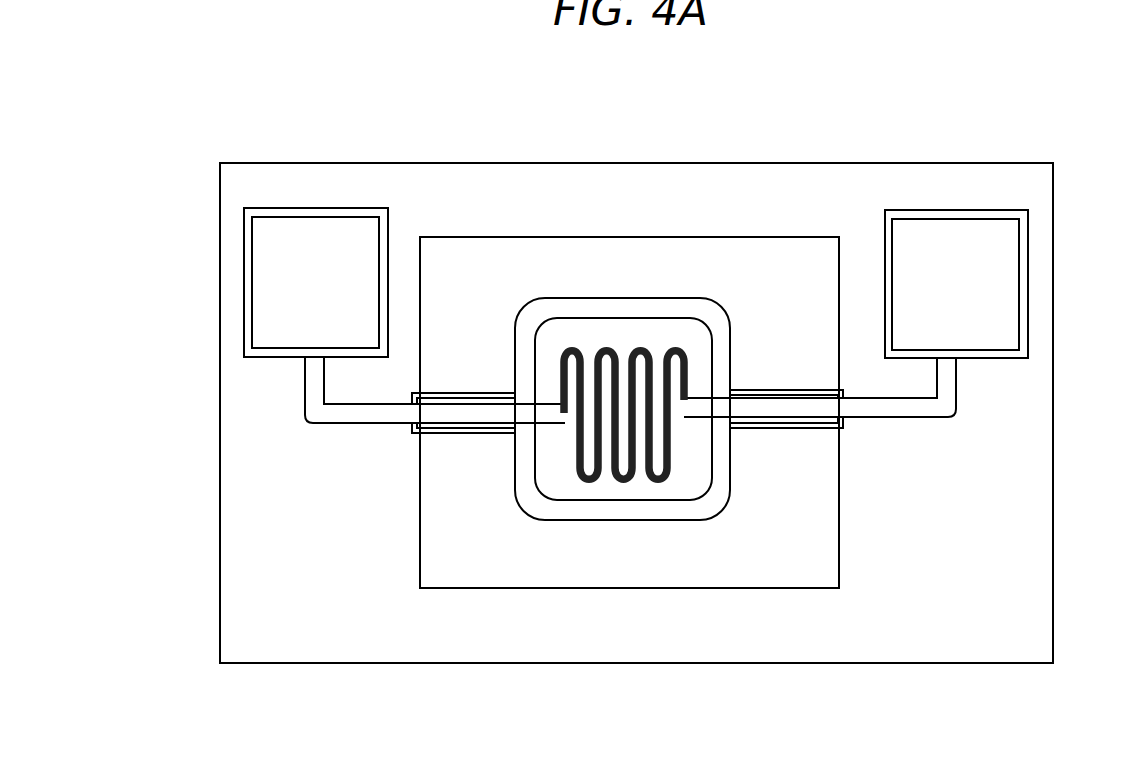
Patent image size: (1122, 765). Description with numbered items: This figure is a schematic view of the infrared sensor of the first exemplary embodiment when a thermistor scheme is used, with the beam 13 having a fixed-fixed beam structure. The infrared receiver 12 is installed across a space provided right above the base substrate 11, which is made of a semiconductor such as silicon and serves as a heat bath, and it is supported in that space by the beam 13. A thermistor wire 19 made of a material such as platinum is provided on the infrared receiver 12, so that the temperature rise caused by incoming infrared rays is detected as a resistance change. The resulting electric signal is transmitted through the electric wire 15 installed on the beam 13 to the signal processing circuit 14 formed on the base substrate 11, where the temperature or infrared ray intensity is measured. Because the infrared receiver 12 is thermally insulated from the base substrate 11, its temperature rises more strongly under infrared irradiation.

The base substrate 11 is at (868, 193).
The infrared receiver 12 is at (633, 308).
The beam 13 is at (455, 426).
The signal processing circuit 14 is at (292, 287).
The electric wire 15 is at (318, 413).
The thermistor wire 19 is at (573, 352).